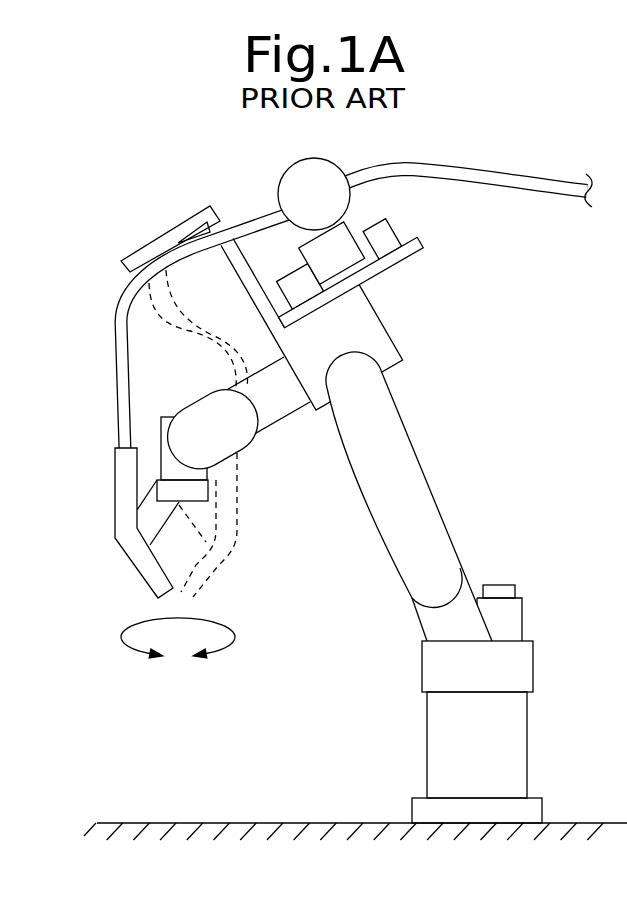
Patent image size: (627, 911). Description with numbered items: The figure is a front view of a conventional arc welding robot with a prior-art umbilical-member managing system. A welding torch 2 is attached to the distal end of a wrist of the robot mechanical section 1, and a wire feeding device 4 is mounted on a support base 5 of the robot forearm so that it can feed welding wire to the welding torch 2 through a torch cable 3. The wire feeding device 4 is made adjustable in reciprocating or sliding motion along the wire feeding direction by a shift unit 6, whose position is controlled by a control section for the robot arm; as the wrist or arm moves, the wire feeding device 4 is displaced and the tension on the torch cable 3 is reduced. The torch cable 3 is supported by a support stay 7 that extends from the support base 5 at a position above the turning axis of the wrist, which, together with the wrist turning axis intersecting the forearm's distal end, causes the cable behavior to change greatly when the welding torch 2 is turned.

The robot mechanical section 1 is at (447, 451).
The welding torch 2 is at (135, 556).
The torch cable 3 is at (114, 347).
The wire feeding device 4 is at (292, 180).
The support base 5 is at (373, 327).
The shift unit 6 is at (388, 232).
The support stay 7 is at (163, 237).